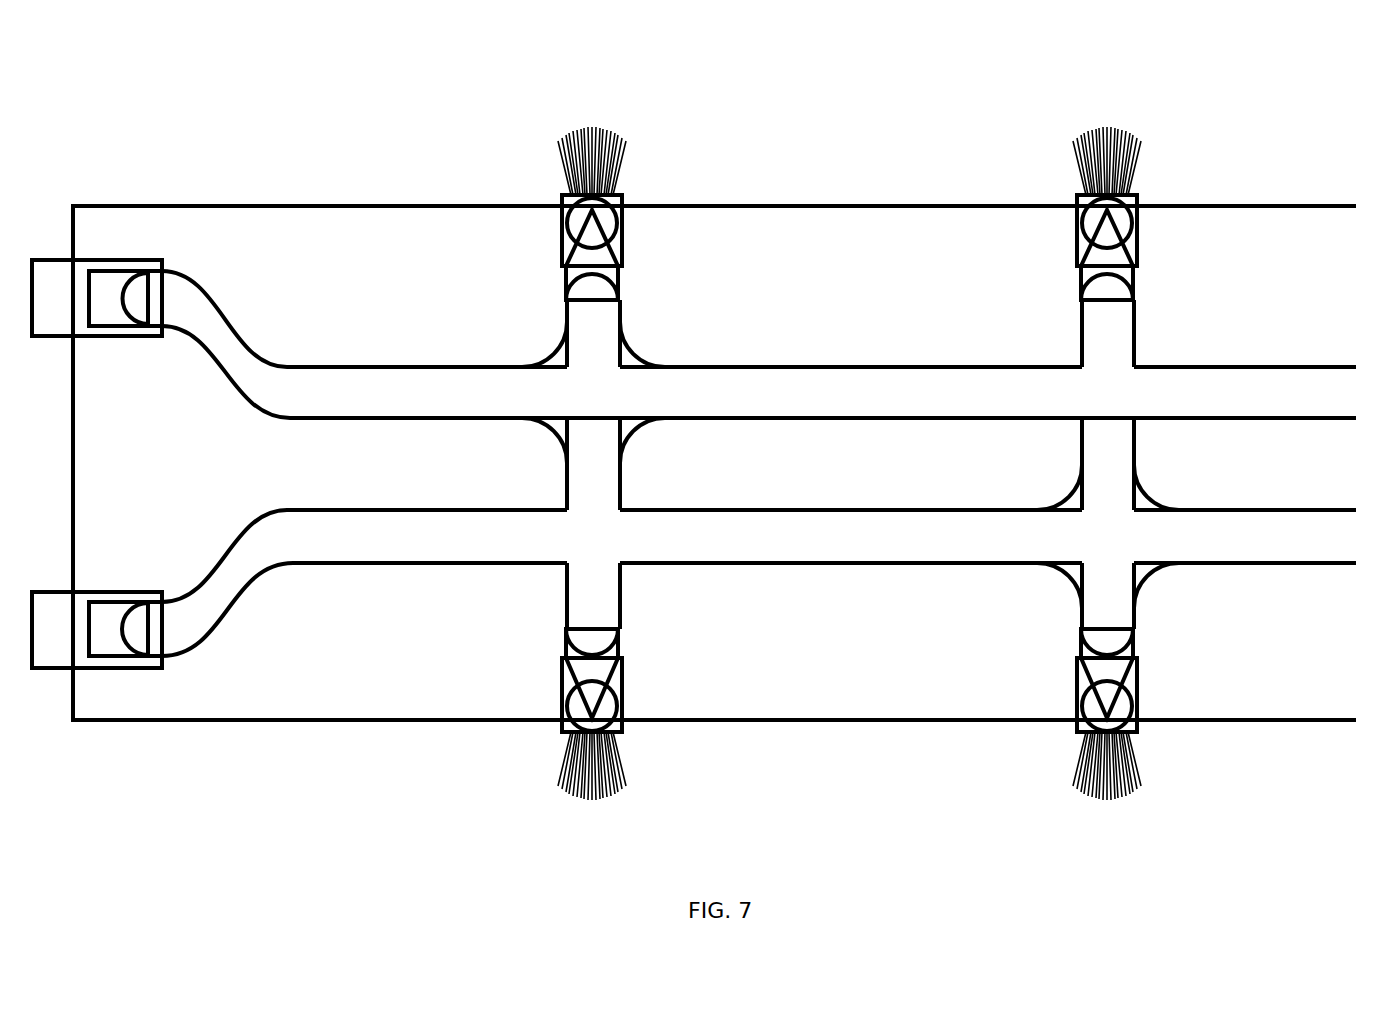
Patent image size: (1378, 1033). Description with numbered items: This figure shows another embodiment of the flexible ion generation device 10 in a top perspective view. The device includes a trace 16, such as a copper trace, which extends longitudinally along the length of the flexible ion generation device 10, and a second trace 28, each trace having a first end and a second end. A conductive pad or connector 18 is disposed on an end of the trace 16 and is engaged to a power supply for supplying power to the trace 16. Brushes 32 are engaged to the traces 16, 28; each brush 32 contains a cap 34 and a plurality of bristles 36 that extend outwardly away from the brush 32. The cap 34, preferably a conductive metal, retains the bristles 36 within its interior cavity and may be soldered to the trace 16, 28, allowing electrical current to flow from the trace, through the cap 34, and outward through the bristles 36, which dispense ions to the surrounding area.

The flexible ion generation device 10 is at (723, 142).
The trace 16 is at (278, 360).
The conductive pad or connector 18 is at (50, 258).
The second trace 28 is at (378, 535).
The brush 32 is at (667, 232).
The cap 34 is at (622, 250).
The bristles 36 is at (625, 163).